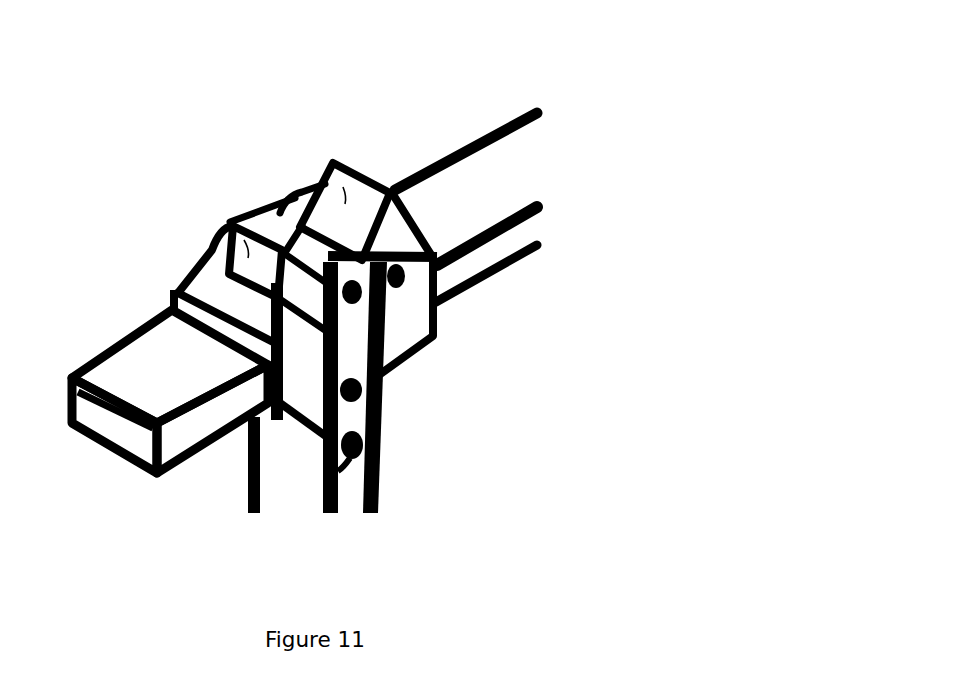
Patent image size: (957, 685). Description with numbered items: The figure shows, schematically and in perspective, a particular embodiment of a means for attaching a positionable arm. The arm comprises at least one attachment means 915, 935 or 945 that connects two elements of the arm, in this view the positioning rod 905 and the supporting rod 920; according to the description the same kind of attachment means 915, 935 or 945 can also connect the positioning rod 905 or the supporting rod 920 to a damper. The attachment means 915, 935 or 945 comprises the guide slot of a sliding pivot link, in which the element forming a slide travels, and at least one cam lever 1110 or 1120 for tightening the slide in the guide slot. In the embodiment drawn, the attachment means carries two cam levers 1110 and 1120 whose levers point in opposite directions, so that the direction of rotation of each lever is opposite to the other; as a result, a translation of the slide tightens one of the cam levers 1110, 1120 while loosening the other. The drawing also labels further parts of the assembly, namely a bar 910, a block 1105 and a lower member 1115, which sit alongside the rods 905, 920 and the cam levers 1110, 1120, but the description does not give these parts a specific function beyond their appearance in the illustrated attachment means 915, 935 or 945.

The positioning rod 905 is at (343, 498).
The vertical bar 910 is at (370, 440).
The attachment means 915 is at (343, 413).
The supporting rod 920 is at (502, 172).
The attachment means 935 is at (374, 257).
The attachment means 945 is at (181, 67).
The mounting block 1105 is at (410, 312).
The cam lever 1110 is at (352, 164).
The support tube 1115 is at (268, 412).
The cam lever 1120 is at (230, 228).